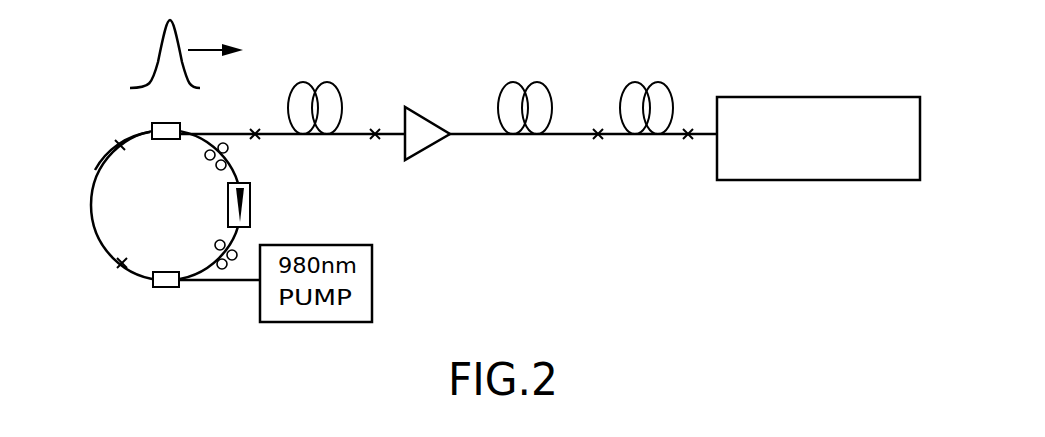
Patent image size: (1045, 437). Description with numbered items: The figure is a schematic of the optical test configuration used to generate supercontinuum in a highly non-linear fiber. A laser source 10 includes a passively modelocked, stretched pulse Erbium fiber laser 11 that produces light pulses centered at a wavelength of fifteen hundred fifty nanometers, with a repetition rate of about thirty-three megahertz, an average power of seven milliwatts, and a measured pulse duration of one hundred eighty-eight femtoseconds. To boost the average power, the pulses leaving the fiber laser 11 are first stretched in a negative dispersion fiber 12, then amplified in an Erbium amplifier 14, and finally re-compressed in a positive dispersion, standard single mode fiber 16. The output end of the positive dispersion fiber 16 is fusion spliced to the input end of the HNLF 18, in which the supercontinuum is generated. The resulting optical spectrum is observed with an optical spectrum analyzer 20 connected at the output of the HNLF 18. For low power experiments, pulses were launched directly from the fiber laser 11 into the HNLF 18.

The laser source 10 is at (99, 269).
The Erbium fiber laser 11 is at (107, 160).
The negative dispersion fiber 12 is at (343, 105).
The Erbium amplifier 14 is at (428, 150).
The positive dispersion fiber 16 is at (553, 95).
The highly non-linear fiber 18 is at (673, 103).
The optical spectrum analyzer 20 is at (815, 97).